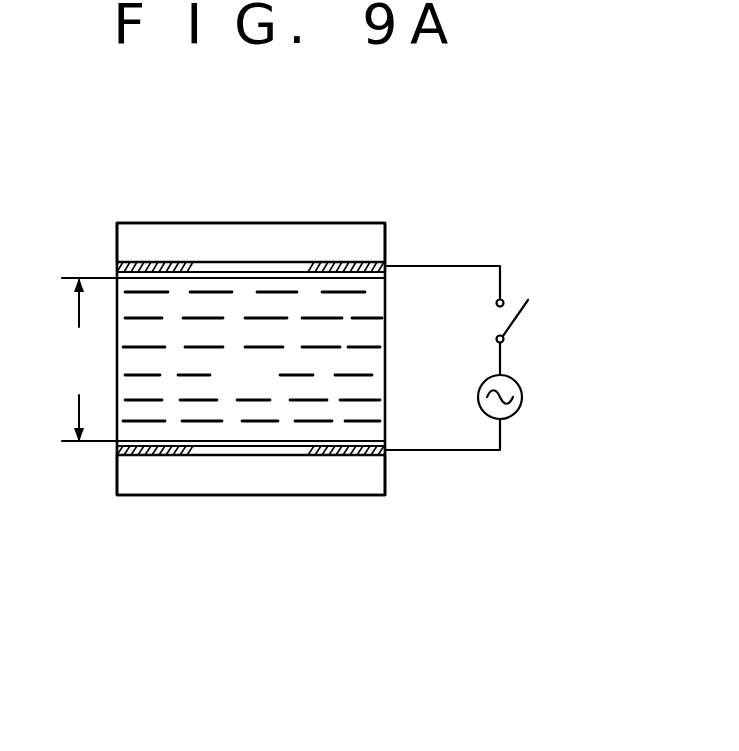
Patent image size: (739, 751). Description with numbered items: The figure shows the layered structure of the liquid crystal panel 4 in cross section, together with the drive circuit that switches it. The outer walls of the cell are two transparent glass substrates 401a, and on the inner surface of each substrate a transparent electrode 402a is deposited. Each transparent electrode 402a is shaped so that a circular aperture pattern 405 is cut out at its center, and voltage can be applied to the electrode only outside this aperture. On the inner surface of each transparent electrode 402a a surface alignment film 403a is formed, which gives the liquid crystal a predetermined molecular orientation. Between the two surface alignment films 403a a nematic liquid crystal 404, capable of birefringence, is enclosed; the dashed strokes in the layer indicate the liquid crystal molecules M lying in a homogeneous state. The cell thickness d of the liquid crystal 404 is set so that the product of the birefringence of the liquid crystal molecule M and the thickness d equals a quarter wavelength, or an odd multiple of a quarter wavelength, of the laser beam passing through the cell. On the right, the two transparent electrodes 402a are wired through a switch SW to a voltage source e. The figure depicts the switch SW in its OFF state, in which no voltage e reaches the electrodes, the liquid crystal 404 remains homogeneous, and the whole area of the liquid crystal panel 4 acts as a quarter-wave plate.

The liquid crystal panel 4 is at (138, 210).
The liquid crystal molecule M is at (157, 318).
The circular aperture pattern 405 is at (260, 270).
The transparent glass substrate 401a is at (342, 237).
The transparent electrode 402a is at (364, 263).
The surface alignment film 403a is at (371, 280).
The liquid crystal 404 is at (362, 361).
The switch SW is at (520, 322).
The voltage e is at (519, 393).
The cell thickness d is at (80, 360).